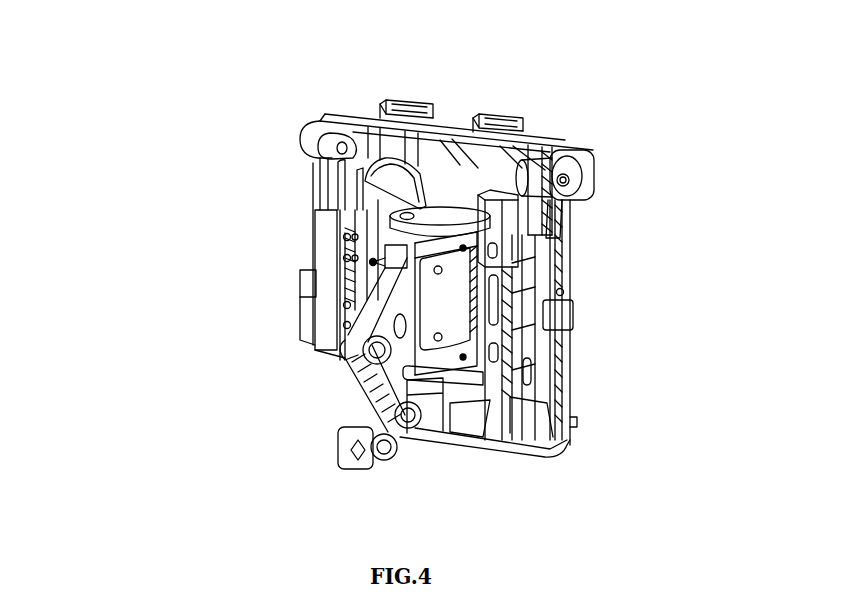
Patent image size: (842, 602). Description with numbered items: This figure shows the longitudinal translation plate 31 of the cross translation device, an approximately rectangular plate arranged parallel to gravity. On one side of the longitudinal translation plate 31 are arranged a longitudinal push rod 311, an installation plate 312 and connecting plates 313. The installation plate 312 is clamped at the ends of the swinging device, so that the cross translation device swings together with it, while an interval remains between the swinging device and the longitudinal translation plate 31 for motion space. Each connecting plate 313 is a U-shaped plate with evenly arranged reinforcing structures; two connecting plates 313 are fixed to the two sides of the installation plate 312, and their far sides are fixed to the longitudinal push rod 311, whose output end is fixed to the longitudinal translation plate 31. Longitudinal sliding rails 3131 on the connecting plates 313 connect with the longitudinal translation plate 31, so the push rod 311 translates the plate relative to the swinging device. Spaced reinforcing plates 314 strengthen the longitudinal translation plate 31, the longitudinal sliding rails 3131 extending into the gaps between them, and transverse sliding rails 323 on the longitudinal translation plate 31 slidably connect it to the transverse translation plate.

The longitudinal translation plate 31 is at (575, 445).
The longitudinal push rod 311 is at (320, 217).
The installation plate 312 is at (322, 182).
The connecting plate 313 is at (350, 237).
The longitudinal sliding rail 3131 is at (352, 112).
The reinforcing plate 314 is at (545, 161).
The transverse sliding rail 323 is at (552, 143).